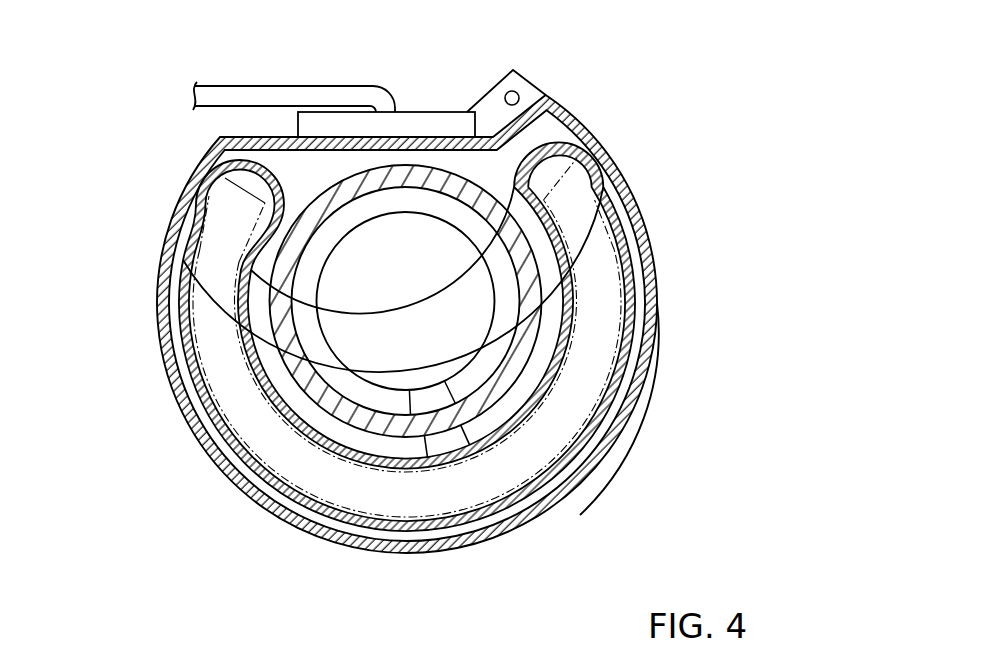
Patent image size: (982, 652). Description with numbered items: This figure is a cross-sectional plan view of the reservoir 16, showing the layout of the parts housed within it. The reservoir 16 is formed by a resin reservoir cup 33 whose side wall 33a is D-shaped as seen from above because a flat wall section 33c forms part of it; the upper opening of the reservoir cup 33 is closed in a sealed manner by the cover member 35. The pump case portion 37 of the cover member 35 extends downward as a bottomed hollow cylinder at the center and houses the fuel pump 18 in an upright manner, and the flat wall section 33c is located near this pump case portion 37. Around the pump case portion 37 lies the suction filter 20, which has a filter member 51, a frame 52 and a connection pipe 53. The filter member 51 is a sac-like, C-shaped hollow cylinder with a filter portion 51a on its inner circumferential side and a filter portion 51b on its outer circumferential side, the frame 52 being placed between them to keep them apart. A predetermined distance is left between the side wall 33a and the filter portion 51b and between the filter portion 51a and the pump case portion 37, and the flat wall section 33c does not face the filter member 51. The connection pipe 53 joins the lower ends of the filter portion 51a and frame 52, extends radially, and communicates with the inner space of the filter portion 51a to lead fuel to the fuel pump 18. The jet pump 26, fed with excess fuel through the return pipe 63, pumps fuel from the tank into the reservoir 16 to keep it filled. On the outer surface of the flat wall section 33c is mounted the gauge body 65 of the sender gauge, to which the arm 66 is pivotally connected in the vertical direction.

The reservoir 16 is at (441, 294).
The fuel pump 18 is at (446, 212).
The suction filter 20 is at (557, 138).
The jet pump 26 is at (516, 61).
The reservoir cup 33 is at (441, 294).
The side wall 33a is at (649, 378).
The flat wall section 33c is at (257, 136).
The cover member 35 is at (432, 398).
The pump case portion 37 is at (300, 301).
The filter member 51 is at (444, 317).
The filter portion 51a is at (540, 408).
The filter portion 51b is at (530, 493).
The frame 52 is at (597, 338).
The connection pipe 53 is at (450, 444).
The return pipe 63 is at (519, 96).
The gauge body 65 is at (420, 127).
The arm 66 is at (318, 97).